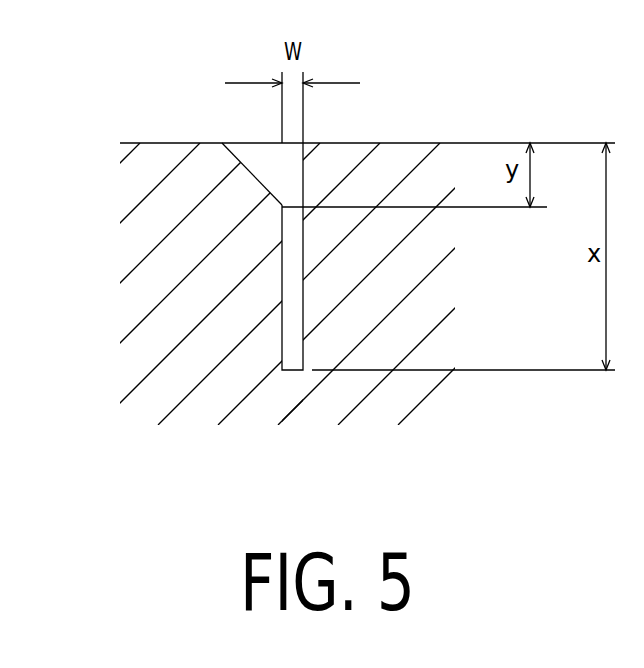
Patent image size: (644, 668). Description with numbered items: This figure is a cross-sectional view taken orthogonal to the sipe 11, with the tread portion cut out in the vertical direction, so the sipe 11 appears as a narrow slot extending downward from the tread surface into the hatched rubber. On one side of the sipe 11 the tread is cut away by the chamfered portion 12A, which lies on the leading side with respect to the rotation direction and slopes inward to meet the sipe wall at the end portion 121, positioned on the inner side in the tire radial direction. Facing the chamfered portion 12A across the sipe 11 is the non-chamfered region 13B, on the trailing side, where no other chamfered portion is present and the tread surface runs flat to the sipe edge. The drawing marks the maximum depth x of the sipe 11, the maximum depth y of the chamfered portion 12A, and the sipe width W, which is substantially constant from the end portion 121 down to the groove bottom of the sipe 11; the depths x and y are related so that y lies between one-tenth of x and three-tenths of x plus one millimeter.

The chamfered portion 12A is at (235, 157).
The non-chamfered region 13B is at (397, 163).
The end portion 121 is at (283, 207).
The sipe 11 is at (293, 352).